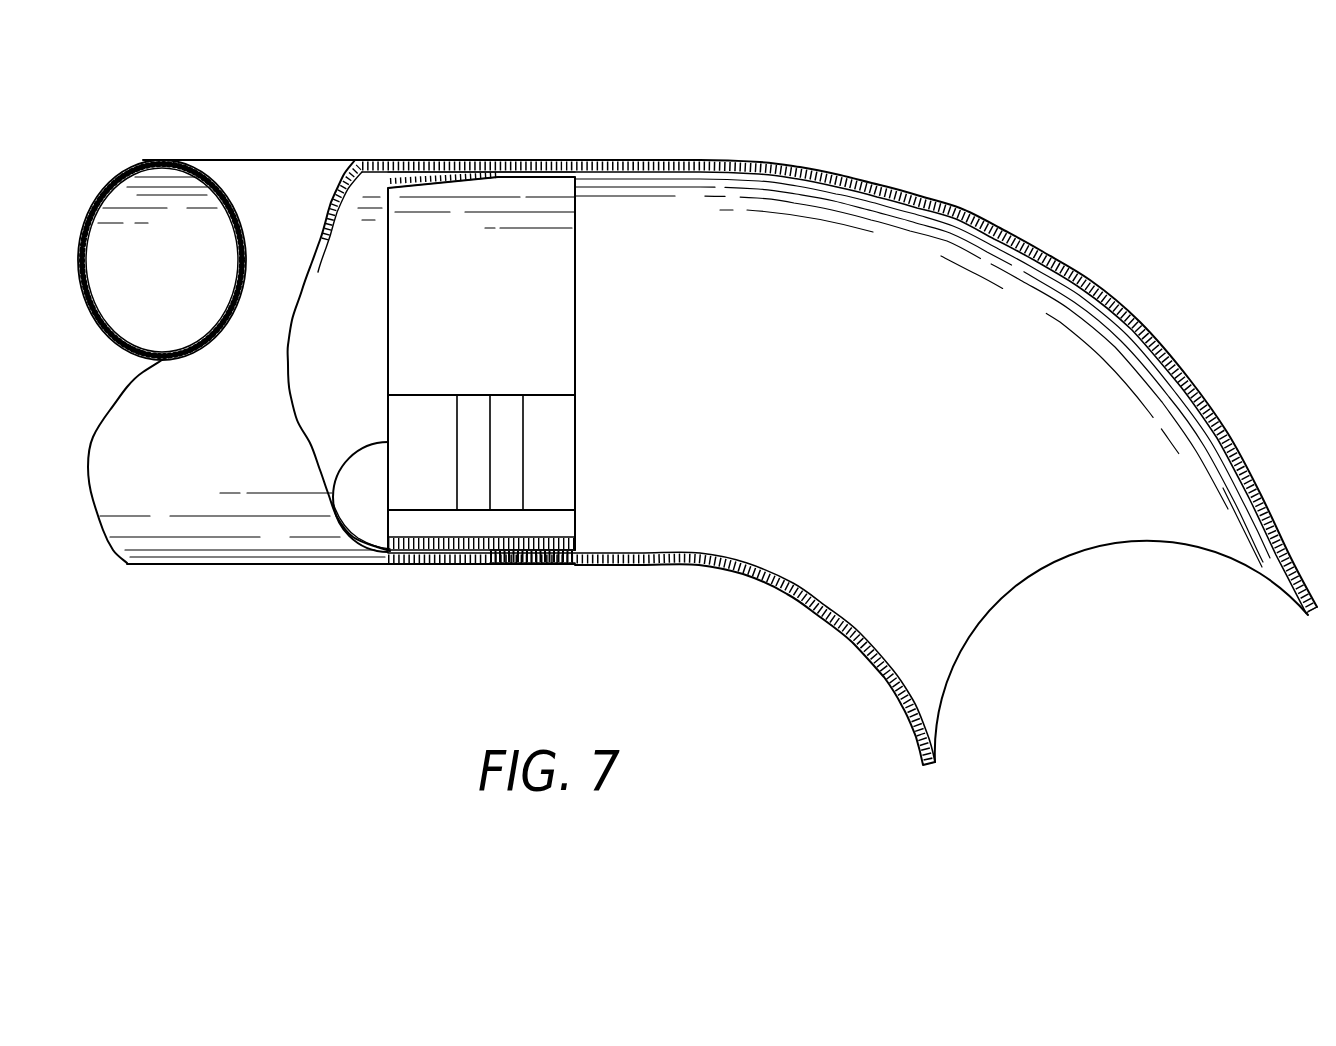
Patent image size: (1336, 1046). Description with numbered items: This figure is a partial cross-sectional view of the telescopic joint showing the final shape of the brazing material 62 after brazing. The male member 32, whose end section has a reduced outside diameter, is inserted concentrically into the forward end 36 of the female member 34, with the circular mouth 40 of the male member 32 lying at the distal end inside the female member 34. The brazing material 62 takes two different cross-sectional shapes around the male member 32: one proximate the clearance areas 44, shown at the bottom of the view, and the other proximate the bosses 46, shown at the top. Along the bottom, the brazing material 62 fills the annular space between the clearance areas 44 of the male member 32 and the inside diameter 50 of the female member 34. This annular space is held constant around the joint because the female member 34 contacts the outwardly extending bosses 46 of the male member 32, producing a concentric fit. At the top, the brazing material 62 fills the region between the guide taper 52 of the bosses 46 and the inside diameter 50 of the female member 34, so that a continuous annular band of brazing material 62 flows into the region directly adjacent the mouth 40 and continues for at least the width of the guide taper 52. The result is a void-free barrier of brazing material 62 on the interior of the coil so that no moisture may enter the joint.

The male member 32 is at (952, 198).
The female member 34 is at (221, 150).
The forward end 36 is at (500, 565).
The mouth 40 is at (334, 505).
The clearance areas 44 is at (532, 565).
The bosses 46 is at (480, 166).
The inside diameter 50 is at (351, 232).
The guide taper 52 is at (448, 172).
The brazing material 62 is at (403, 172).